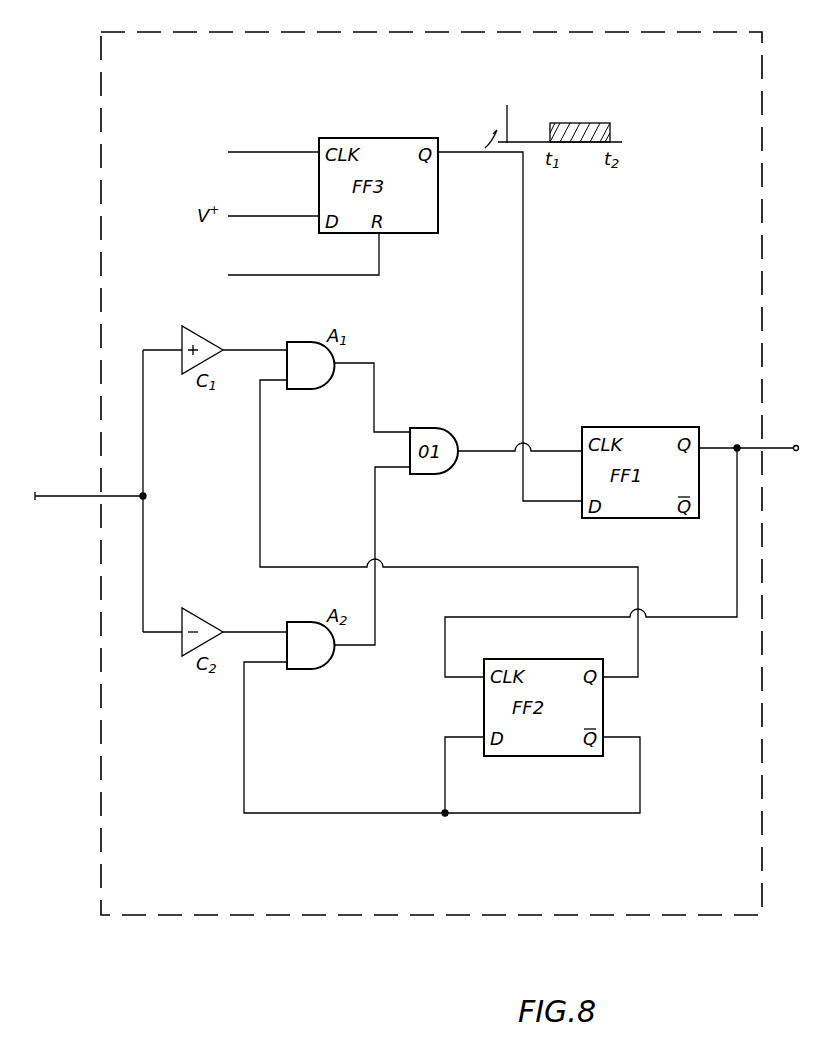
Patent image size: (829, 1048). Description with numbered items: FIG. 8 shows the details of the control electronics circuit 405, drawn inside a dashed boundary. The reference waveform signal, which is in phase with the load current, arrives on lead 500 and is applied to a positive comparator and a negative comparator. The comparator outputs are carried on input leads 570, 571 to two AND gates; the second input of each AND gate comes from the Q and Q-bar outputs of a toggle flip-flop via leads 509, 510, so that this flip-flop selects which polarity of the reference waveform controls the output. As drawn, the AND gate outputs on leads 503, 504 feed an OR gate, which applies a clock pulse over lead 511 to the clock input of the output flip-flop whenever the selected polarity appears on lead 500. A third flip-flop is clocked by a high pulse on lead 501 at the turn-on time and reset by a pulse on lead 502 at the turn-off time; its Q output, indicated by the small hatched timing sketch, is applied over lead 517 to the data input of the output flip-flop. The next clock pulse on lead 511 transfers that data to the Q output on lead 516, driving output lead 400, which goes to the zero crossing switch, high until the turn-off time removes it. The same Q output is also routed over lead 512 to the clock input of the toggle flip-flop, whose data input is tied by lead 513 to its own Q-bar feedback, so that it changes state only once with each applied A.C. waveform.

The output lead 400 is at (784, 450).
The control electronics circuit 405 is at (372, 916).
The lead 500 is at (85, 494).
The lead 501 is at (269, 150).
The lead 502 is at (257, 275).
The AND gate A1 output line 503 is at (375, 392).
The AND gate A2 output line 504 is at (375, 527).
The lead 509 is at (260, 477).
The lead 510 is at (545, 815).
The lead 511 is at (487, 449).
The flip-flop FF1 Q to FF2 clock line 512 is at (697, 620).
The flip-flop FF2 D input line 513 is at (443, 776).
The lead 516 is at (719, 445).
The lead 517 is at (523, 243).
The input lead 570 is at (252, 348).
The input lead 571 is at (252, 630).